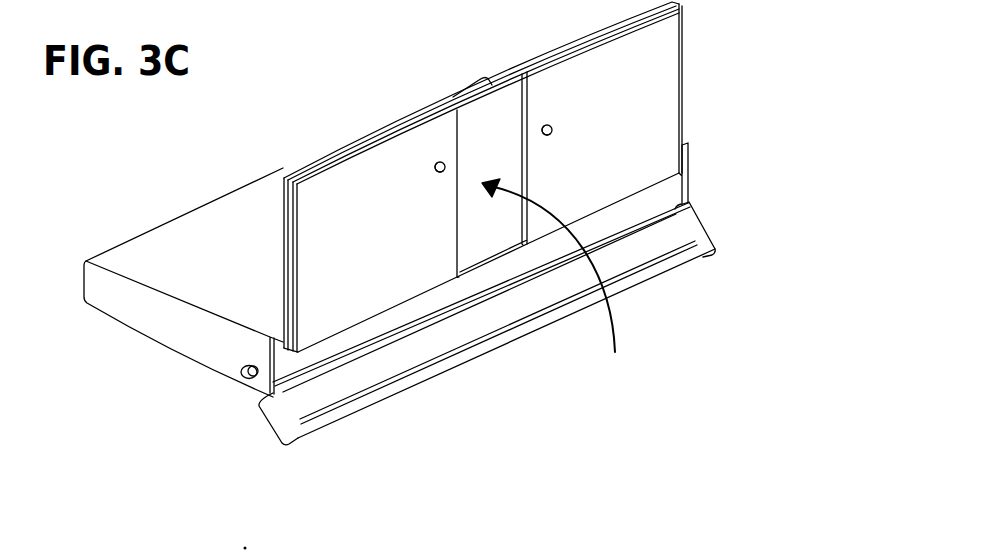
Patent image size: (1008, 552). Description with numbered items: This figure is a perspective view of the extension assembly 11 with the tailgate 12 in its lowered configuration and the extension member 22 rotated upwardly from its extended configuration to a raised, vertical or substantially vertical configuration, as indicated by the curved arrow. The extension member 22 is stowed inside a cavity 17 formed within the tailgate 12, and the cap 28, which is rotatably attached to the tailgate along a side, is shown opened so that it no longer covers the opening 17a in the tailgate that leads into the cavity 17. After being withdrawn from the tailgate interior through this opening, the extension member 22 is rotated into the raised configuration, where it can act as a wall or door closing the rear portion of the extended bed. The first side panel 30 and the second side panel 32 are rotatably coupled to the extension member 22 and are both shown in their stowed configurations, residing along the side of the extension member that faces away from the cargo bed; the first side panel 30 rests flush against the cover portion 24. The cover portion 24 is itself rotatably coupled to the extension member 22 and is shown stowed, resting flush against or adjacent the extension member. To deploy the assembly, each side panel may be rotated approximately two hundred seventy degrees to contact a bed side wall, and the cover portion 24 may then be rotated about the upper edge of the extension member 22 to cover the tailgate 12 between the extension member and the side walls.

The extension assembly 11 is at (86, 318).
The tailgate 12 is at (160, 322).
The cavity 17 is at (670, 192).
The opening 17a is at (338, 349).
The extension member 22 is at (317, 158).
The cover portion 24 is at (505, 105).
The cap 28 is at (348, 420).
The first side panel 30 is at (317, 228).
The second side panel 32 is at (655, 72).